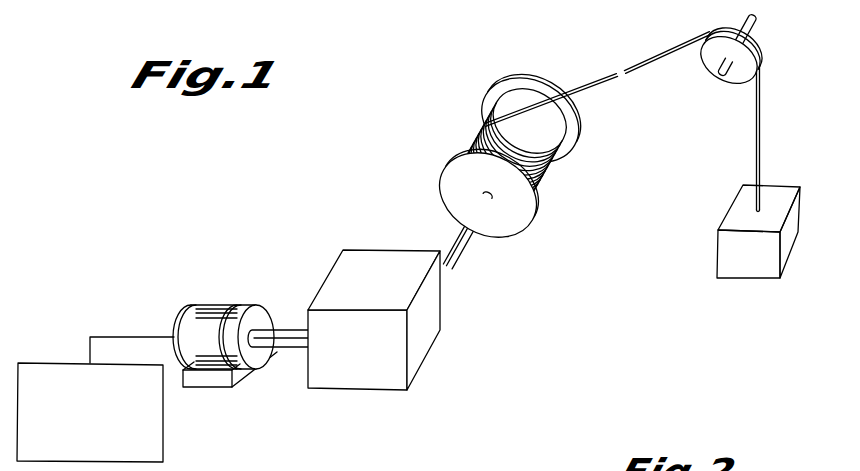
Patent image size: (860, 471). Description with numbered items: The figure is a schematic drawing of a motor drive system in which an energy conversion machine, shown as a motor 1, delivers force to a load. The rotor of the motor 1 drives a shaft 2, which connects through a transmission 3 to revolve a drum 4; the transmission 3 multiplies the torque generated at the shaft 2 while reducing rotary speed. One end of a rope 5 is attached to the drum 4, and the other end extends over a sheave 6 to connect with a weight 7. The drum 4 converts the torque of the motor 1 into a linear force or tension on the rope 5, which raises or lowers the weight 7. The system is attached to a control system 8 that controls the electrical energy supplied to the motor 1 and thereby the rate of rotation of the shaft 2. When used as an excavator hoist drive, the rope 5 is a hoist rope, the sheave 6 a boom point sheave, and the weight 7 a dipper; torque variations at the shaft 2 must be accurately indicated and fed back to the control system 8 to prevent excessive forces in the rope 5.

The motor 1 is at (217, 305).
The shaft 2 is at (285, 330).
The transmission 3 is at (423, 342).
The drum 4 is at (467, 153).
The rope 5 is at (596, 87).
The sheave 6 is at (760, 42).
The weight 7 is at (745, 267).
The control system 8 is at (163, 430).